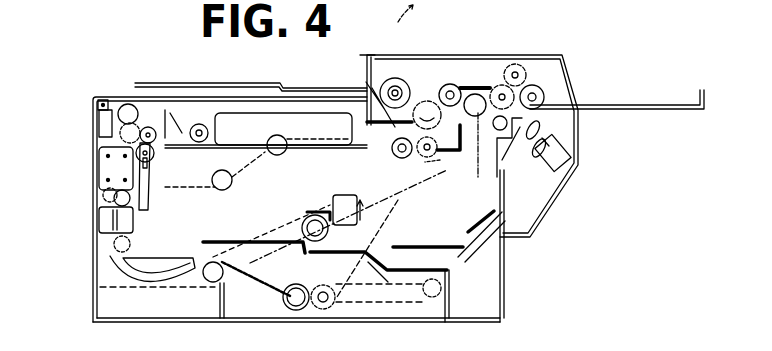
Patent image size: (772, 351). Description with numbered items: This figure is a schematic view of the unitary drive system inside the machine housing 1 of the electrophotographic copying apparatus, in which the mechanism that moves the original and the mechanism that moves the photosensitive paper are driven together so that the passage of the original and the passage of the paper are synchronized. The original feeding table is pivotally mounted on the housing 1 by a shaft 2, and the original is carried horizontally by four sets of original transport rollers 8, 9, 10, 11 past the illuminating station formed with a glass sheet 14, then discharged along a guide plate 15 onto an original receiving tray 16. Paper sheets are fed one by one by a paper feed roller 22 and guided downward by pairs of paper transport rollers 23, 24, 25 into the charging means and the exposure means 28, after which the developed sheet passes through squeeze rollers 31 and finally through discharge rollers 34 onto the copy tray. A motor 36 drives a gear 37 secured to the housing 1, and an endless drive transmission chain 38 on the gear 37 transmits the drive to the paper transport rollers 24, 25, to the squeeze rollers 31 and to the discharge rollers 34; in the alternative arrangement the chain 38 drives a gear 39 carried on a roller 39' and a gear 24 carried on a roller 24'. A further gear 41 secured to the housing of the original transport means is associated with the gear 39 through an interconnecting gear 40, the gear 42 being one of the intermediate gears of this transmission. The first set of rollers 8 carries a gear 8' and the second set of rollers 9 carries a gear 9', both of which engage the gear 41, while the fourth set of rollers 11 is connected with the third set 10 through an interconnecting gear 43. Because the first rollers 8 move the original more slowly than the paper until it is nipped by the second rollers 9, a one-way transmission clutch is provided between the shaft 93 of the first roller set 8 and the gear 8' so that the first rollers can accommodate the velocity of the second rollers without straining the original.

The machine housing 1 is at (93, 128).
The shaft 2 is at (168, 84).
The first set of original transport rollers 8 is at (413, 38).
The gear 8' is at (292, 126).
The second set of original transport rollers 9 is at (451, 62).
The gear 9' is at (477, 57).
The third set of original transport rollers 10 is at (500, 70).
The fourth set of original transport rollers 11 is at (537, 75).
The glass sheet 14 is at (135, 200).
The guide plate 15 is at (428, 104).
The original receiving tray 16 is at (635, 104).
The paper feed roller 22 is at (200, 130).
The paper transport rollers 23 is at (128, 108).
The paper transport rollers 24 is at (83, 194).
The roller 24' is at (70, 212).
The paper transport rollers 25 is at (113, 252).
The exposure means 28 is at (122, 231).
The squeeze rollers 31 is at (218, 276).
The discharge rollers 34 is at (324, 308).
The motor 36 is at (341, 195).
The gear 37 is at (302, 220).
The chain 38 is at (379, 242).
The gear 39 is at (388, 164).
The roller 39' is at (416, 166).
The interconnecting gear 40 is at (430, 161).
The gear 41 is at (459, 145).
The intermediate gear 42 is at (474, 116).
The interconnecting gear 43 is at (523, 68).
The shaft 93 is at (378, 96).